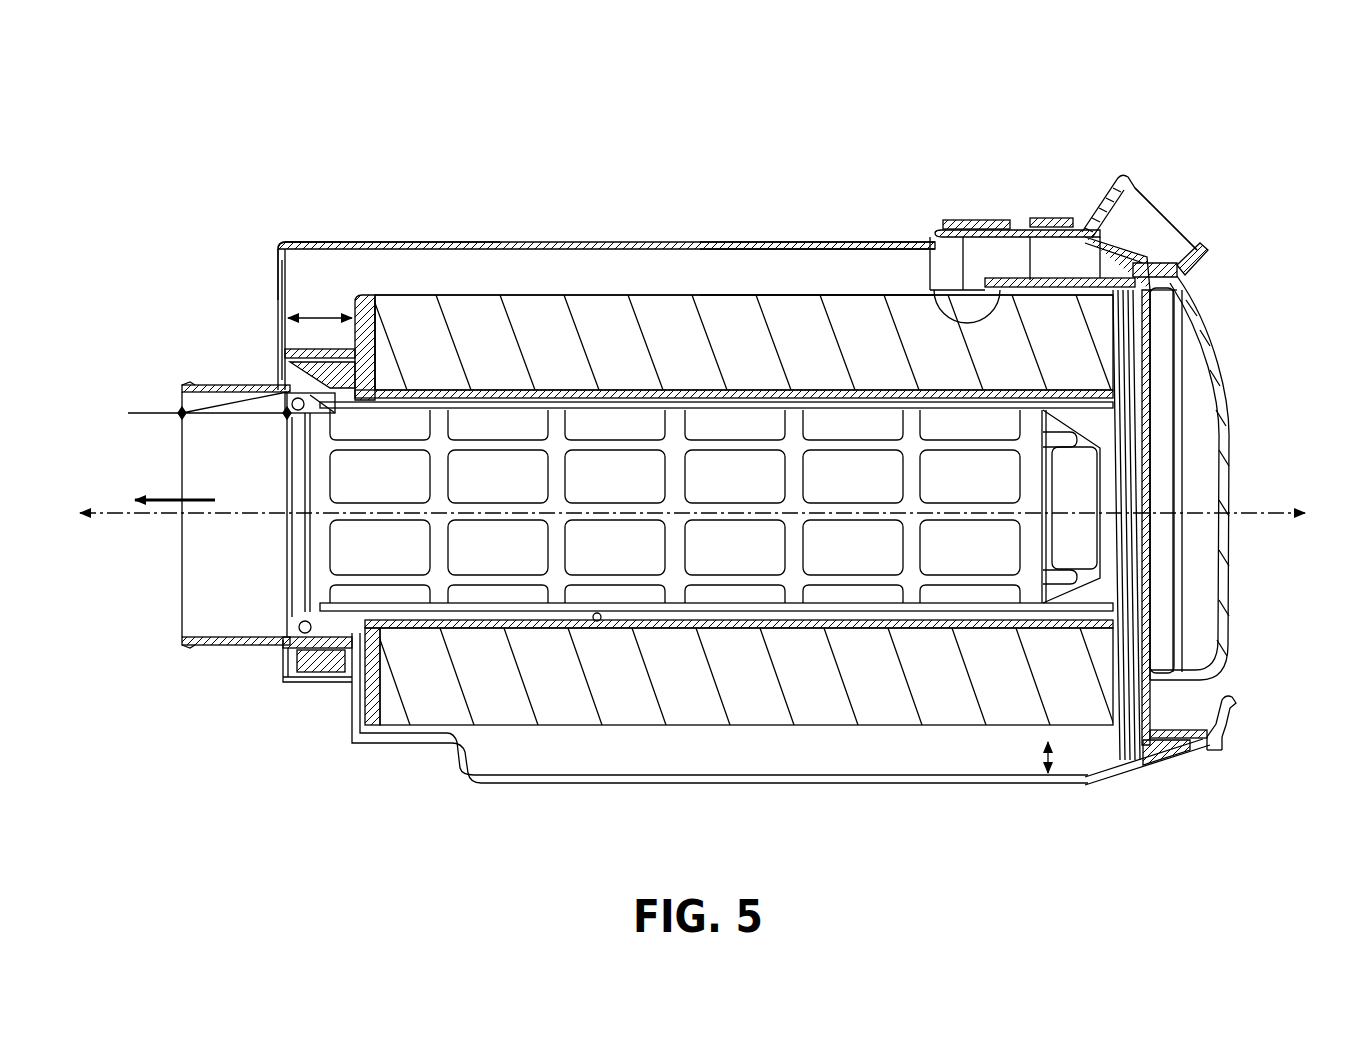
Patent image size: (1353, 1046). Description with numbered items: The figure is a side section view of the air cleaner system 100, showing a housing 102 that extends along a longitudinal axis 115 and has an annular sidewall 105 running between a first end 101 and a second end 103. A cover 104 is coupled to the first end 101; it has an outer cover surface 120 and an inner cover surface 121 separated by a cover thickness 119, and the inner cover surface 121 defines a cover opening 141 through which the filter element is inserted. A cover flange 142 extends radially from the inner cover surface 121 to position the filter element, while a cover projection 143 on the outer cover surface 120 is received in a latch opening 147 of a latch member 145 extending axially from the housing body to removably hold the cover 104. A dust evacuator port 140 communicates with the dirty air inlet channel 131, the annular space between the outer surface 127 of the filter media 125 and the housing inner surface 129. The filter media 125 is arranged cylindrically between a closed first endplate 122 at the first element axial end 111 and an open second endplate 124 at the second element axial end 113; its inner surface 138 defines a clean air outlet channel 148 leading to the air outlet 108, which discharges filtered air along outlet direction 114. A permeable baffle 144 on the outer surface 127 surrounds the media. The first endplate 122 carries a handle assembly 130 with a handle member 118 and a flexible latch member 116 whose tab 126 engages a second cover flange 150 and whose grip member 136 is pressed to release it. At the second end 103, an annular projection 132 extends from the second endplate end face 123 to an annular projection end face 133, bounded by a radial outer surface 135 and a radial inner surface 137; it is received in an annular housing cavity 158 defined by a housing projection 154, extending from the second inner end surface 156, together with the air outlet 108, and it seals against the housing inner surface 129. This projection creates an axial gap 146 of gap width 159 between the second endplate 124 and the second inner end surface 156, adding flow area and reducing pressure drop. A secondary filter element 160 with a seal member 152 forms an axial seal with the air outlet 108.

The air cleaner system 100 is at (1163, 123).
The first end 101 is at (1257, 772).
The housing 102 is at (590, 243).
The second end 103 is at (278, 746).
The cover 104 is at (1113, 740).
The annular sidewall 105 is at (483, 243).
The air outlet 108 is at (215, 637).
The first element axial end 111 is at (1158, 320).
The second element axial end 113 is at (347, 699).
The outlet direction 114 is at (170, 497).
The longitudinal axis 115 is at (1245, 505).
The latch member 116 is at (1228, 738).
The handle member 118 is at (1232, 545).
The cover thickness 119 is at (1048, 778).
The outer cover surface 120 is at (978, 220).
The inner cover surface 121 is at (975, 323).
The first endplate 122 is at (1152, 360).
The second endplate end face 123 is at (357, 303).
The second endplate 124 is at (378, 318).
The filter media 125 is at (847, 305).
The tab 126 is at (1197, 757).
The outer surface 127 is at (655, 296).
The housing inner surface 129 is at (742, 250).
The handle assembly 130 is at (1246, 394).
The dirty air inlet channel 131 is at (795, 272).
The annular projection 132 is at (330, 665).
The annular projection end face 133 is at (300, 655).
The radial outer surface 135 is at (300, 357).
The grip member 136 is at (1238, 700).
The radial inner surface 137 is at (285, 643).
The inner surface 138 is at (597, 622).
The dust evacuator port 140 is at (1130, 205).
The cover opening 141 is at (1163, 777).
The cover flange 142 is at (1183, 265).
The cover projection 143 is at (1020, 217).
The permeable baffle 144 is at (513, 726).
The latch member 145 is at (1062, 218).
The axial gap 146 is at (280, 250).
The latch opening 147 is at (1000, 220).
The clean air outlet channel 148 is at (852, 597).
The second cover flange 150 is at (1235, 792).
The seal member 152 is at (190, 409).
The housing projection 154 is at (313, 347).
The second inner end surface 156 is at (282, 270).
The housing cavity 158 is at (283, 372).
The gap width 159 is at (312, 298).
The secondary filter element 160 is at (1003, 620).